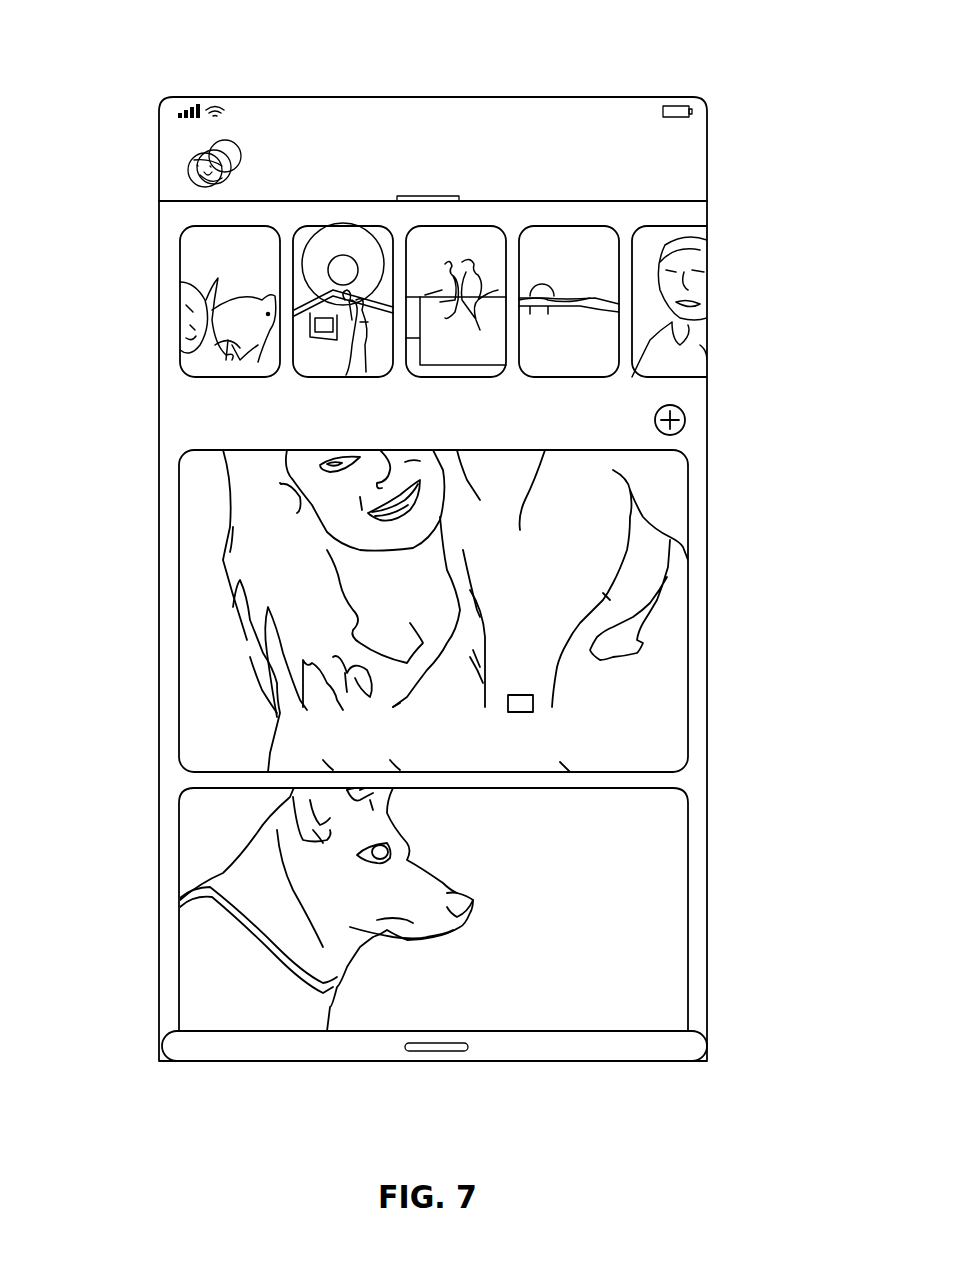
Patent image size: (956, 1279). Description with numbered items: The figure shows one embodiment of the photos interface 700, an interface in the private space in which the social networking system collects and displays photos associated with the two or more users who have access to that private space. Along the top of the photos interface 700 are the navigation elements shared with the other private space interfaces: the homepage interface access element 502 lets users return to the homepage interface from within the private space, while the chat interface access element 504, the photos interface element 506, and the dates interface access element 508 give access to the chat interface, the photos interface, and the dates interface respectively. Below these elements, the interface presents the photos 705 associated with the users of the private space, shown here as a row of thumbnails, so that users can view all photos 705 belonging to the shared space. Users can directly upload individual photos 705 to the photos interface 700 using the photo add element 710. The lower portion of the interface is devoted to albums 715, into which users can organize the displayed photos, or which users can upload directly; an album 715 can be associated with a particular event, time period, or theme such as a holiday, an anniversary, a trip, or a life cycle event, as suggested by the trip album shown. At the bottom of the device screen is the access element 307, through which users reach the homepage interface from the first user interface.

The photos interface 700 is at (159, 34).
The homepage interface access element 502 is at (198, 160).
The chat interface access element 504 is at (330, 135).
The photos interface element 506 is at (482, 150).
The dates interface access element 508 is at (563, 142).
The photos 705 is at (185, 340).
The photo add element 710 is at (685, 420).
The albums 715 is at (690, 633).
The access element 307 is at (190, 1043).